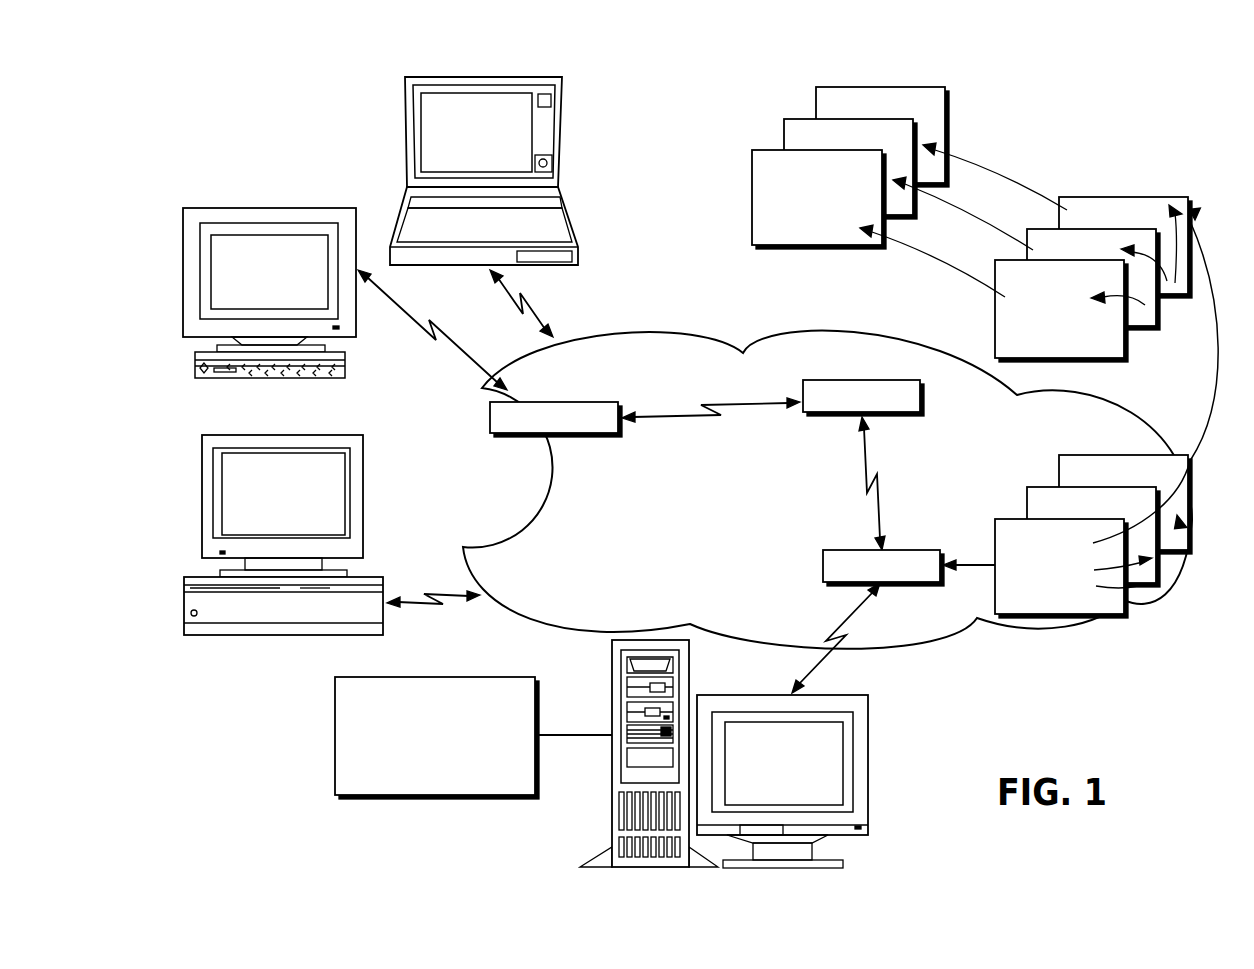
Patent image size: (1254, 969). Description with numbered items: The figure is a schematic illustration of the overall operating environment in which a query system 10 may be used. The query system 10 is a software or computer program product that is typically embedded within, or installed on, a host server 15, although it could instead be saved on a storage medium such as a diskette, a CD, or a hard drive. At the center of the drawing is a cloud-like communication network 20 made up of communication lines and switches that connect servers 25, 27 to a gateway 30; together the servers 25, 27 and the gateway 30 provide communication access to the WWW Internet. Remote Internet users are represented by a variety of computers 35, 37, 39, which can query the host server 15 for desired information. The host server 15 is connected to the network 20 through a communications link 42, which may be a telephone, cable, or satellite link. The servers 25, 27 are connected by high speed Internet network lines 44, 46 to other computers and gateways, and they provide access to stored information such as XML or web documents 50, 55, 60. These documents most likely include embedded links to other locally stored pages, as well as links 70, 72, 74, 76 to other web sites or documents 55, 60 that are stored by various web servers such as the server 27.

The query system 10 is at (333, 713).
The host server 15 is at (612, 680).
The communication network 20 is at (668, 330).
The server 25 is at (862, 550).
The server 27 is at (877, 380).
The gateway 30 is at (553, 437).
The computer 35 is at (576, 213).
The computer 37 is at (327, 207).
The computer 39 is at (327, 433).
The communications link 42 is at (807, 673).
The high speed Internet network line 44 is at (873, 505).
The high speed Internet network line 46 is at (702, 412).
The web documents 50 is at (1206, 518).
The web documents 55 is at (1204, 214).
The web documents 60 is at (762, 134).
The link 70 is at (1220, 377).
The link 72 is at (1020, 184).
The link 74 is at (983, 218).
The link 76 is at (938, 258).